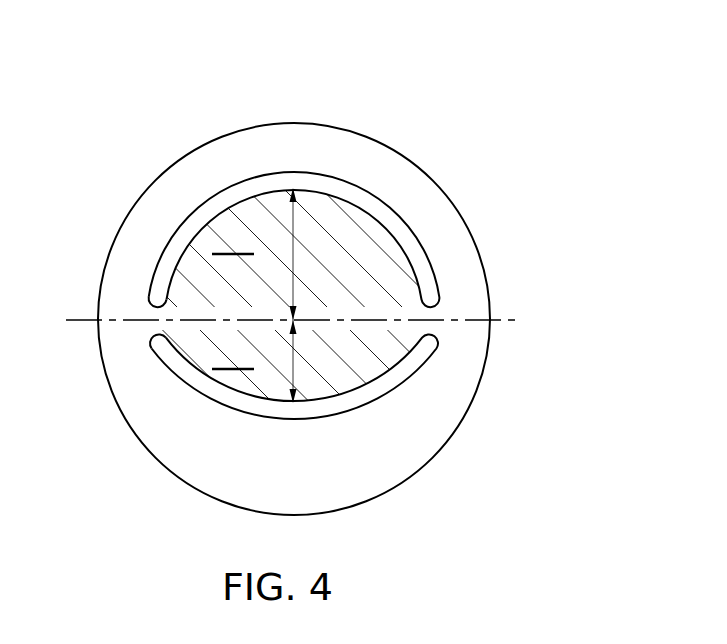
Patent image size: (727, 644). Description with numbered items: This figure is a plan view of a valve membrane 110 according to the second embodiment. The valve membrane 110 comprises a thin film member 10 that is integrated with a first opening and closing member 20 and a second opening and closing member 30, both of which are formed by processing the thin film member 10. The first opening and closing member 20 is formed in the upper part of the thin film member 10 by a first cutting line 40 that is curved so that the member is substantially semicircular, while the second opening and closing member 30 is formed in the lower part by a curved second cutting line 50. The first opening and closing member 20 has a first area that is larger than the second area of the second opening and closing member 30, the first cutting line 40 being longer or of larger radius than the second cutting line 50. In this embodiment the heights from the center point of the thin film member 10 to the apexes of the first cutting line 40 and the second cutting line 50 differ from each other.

The valve membrane 110 is at (394, 104).
The thin film member 10 is at (418, 183).
The first opening and closing member 20 is at (387, 252).
The second opening and closing member 30 is at (387, 352).
The first cutting line 40 is at (165, 262).
The second cutting line 50 is at (170, 353).